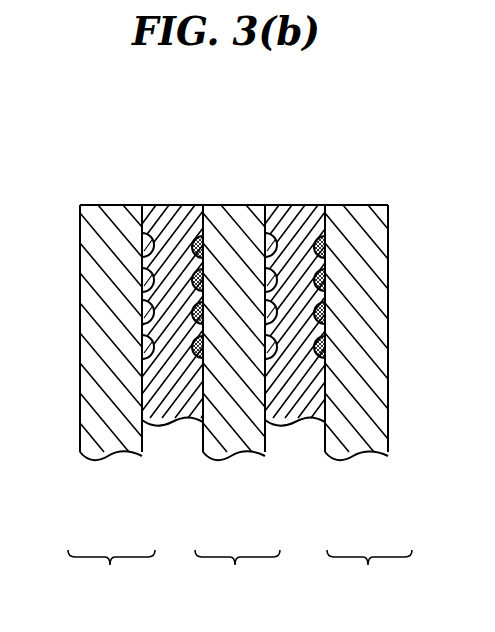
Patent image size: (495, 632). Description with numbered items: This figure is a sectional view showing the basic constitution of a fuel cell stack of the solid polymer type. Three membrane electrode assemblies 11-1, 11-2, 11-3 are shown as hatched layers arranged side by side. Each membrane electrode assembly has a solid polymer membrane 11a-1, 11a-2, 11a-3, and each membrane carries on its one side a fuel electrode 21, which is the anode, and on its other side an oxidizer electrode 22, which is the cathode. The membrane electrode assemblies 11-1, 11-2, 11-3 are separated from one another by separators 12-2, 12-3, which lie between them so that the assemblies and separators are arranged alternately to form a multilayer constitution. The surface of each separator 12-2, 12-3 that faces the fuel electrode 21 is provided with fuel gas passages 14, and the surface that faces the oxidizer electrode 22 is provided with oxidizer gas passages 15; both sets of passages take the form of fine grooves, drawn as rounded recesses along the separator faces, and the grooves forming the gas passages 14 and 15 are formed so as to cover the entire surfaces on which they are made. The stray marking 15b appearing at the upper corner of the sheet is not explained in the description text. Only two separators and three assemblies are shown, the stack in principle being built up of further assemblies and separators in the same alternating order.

The membrane electrode assembly 11-1 is at (111, 403).
The membrane electrode assembly 11-2 is at (237, 403).
The membrane electrode assembly 11-3 is at (368, 403).
The solid polymer membrane 11a-1 is at (112, 212).
The solid polymer membrane 11a-2 is at (230, 208).
The solid polymer membrane 11a-3 is at (350, 208).
The separator 12-2 is at (157, 207).
The separator 12-3 is at (297, 207).
The fuel gas passages 14 is at (197, 207).
The oxidizer gas passages 15 is at (272, 207).
The filler particle 15b is at (471, 28).
The fuel electrode 21 is at (80, 442).
The oxidizer electrode 22 is at (142, 442).